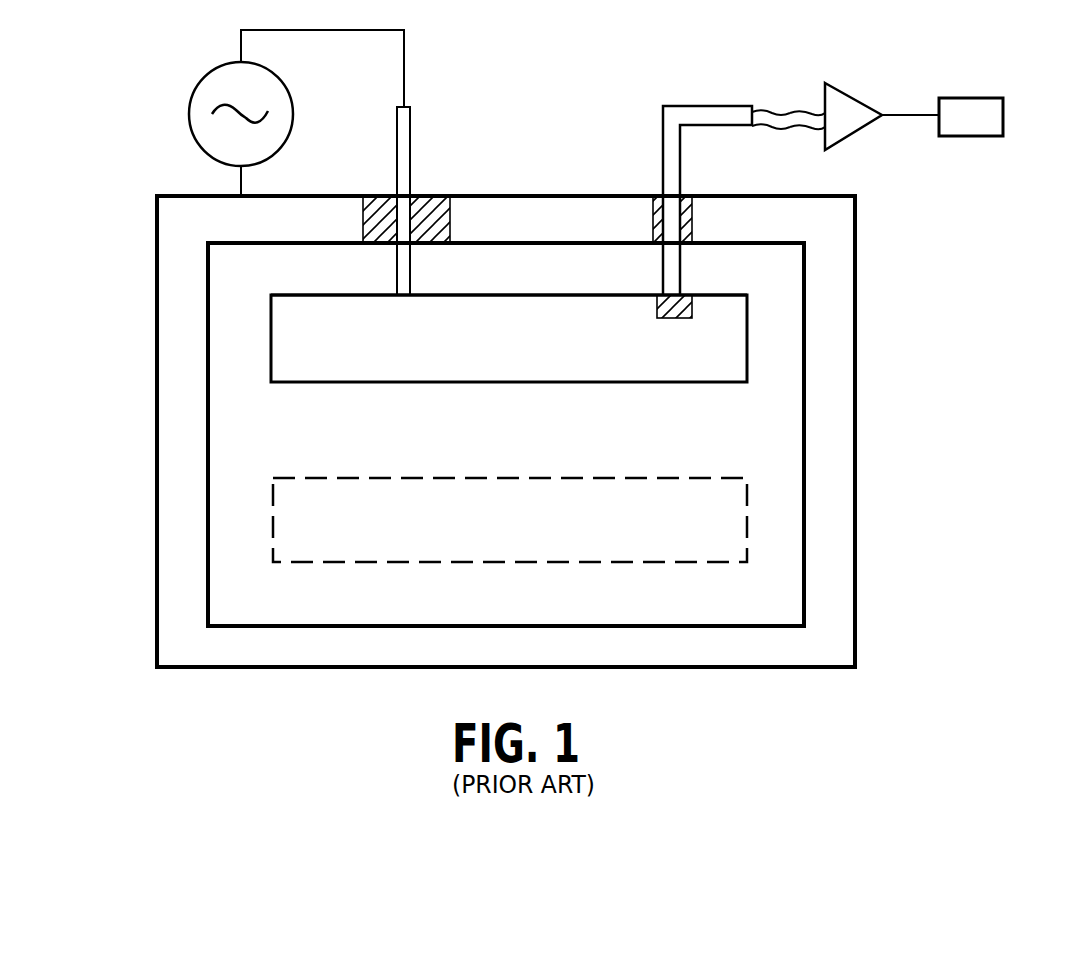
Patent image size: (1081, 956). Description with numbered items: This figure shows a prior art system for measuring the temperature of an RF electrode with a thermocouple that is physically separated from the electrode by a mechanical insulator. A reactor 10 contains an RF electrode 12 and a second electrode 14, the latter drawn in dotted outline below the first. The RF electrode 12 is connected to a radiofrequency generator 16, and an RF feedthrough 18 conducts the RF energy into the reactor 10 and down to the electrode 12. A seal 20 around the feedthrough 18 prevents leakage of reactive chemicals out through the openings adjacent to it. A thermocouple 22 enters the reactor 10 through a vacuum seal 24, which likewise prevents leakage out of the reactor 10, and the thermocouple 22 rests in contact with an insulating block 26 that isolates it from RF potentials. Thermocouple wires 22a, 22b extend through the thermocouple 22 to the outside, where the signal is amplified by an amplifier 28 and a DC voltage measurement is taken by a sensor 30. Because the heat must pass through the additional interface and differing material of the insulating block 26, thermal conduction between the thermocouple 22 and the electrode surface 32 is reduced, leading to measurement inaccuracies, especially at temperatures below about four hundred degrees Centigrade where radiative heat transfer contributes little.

The reactor 10 is at (855, 597).
The RF electrode 12 is at (627, 353).
The second electrode 14 is at (673, 533).
The radiofrequency generator 16 is at (202, 82).
The RF feedthrough 18 is at (410, 135).
The seal 20 is at (430, 205).
The thermocouple 22 is at (680, 170).
The thermocouple wire 22a is at (772, 110).
The thermocouple wire 22b is at (800, 110).
The vacuum seal 24 is at (692, 223).
The insulating block 26 is at (680, 318).
The amplifier 28 is at (853, 105).
The sensor 30 is at (977, 107).
The electrode surface 32 is at (463, 295).